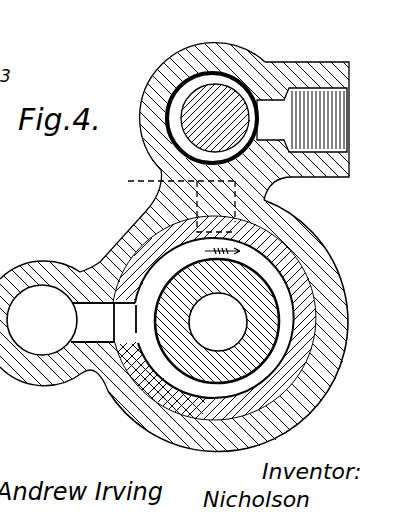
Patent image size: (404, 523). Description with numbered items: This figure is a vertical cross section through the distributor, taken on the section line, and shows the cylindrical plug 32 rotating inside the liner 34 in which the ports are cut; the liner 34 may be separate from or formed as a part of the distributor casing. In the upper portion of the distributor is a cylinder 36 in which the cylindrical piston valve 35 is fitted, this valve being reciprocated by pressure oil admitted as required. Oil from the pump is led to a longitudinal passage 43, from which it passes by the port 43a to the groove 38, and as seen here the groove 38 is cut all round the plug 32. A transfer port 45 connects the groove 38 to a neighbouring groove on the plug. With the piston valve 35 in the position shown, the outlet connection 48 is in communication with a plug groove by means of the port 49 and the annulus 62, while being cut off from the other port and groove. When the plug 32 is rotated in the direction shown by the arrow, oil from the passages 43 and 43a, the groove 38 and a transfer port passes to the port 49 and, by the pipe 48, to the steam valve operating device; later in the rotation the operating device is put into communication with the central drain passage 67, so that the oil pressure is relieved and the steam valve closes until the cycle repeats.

The cylindrical plug 32 is at (217, 372).
The liner 34 is at (281, 392).
The cylindrical piston valve 35 is at (187, 125).
The cylinder 36 is at (167, 62).
The groove 38 is at (207, 325).
The longitudinal passage 43 is at (54, 326).
The port 43a is at (93, 368).
The transfer port 45 is at (137, 420).
The outlet connection 48 is at (312, 90).
The port 49 is at (166, 200).
The annulus 62 is at (176, 92).
The central drain passage 67 is at (218, 322).